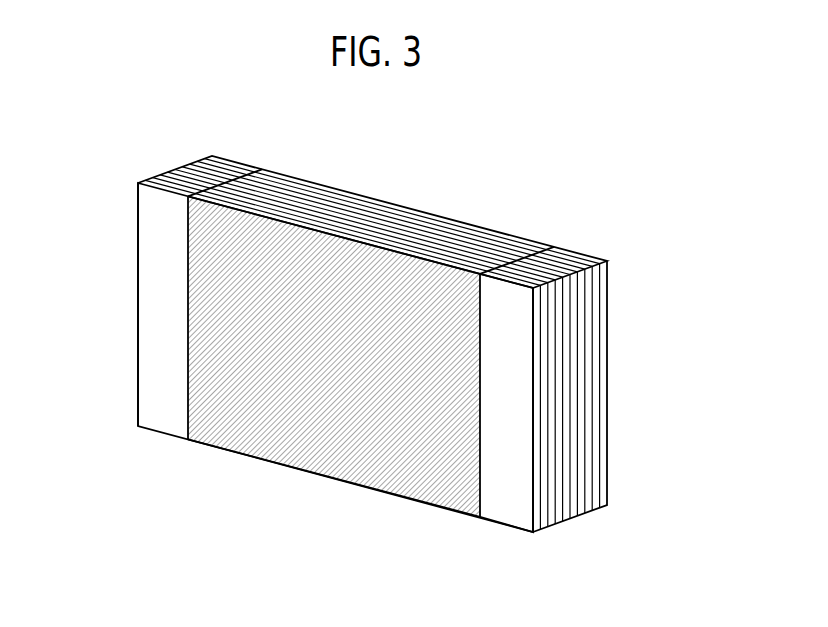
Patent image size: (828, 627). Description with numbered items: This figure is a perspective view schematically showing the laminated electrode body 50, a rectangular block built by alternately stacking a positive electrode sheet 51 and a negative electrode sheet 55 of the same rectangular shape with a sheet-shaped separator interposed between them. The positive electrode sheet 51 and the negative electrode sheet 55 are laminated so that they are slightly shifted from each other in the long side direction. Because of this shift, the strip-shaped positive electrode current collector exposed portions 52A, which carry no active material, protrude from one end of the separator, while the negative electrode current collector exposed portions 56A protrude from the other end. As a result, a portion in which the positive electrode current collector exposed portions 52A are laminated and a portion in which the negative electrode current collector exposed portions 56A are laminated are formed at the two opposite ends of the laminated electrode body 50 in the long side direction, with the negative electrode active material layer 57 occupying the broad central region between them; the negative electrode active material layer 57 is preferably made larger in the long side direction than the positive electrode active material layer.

The laminated electrode body 50 is at (629, 182).
The positive electrode sheet 51 is at (610, 315).
The positive electrode current collector exposed portion 52A is at (500, 512).
The negative electrode sheet 55 is at (135, 293).
The negative electrode current collector exposed portion 56A is at (155, 365).
The negative electrode active material layer 57 is at (317, 463).